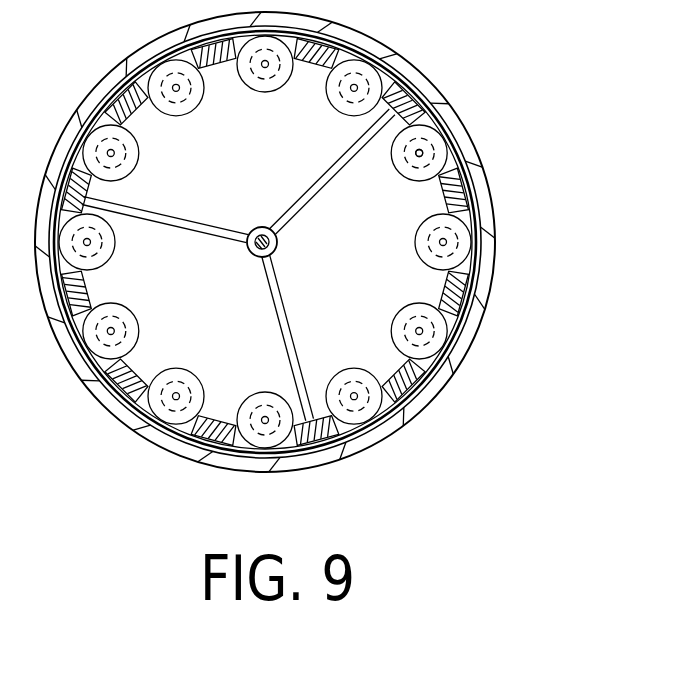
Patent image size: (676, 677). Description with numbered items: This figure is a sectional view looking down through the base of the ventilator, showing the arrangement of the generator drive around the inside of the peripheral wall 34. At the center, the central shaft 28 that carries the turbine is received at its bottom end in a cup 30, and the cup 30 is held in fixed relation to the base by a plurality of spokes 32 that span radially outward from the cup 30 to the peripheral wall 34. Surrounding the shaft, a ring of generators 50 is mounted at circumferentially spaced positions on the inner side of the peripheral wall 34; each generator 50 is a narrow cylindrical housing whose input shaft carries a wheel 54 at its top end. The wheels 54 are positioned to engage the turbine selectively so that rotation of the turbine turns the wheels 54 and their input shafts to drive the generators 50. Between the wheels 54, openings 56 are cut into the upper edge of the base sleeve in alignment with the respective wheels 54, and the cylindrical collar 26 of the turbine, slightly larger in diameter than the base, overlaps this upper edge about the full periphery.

The cylindrical collar 26 is at (493, 272).
The central shaft 28 is at (255, 250).
The cup 30 is at (275, 243).
The spokes 32 is at (317, 192).
The peripheral wall 34 is at (447, 292).
The generators 50 is at (433, 157).
The wheel 54 is at (398, 170).
The openings 56 is at (443, 170).